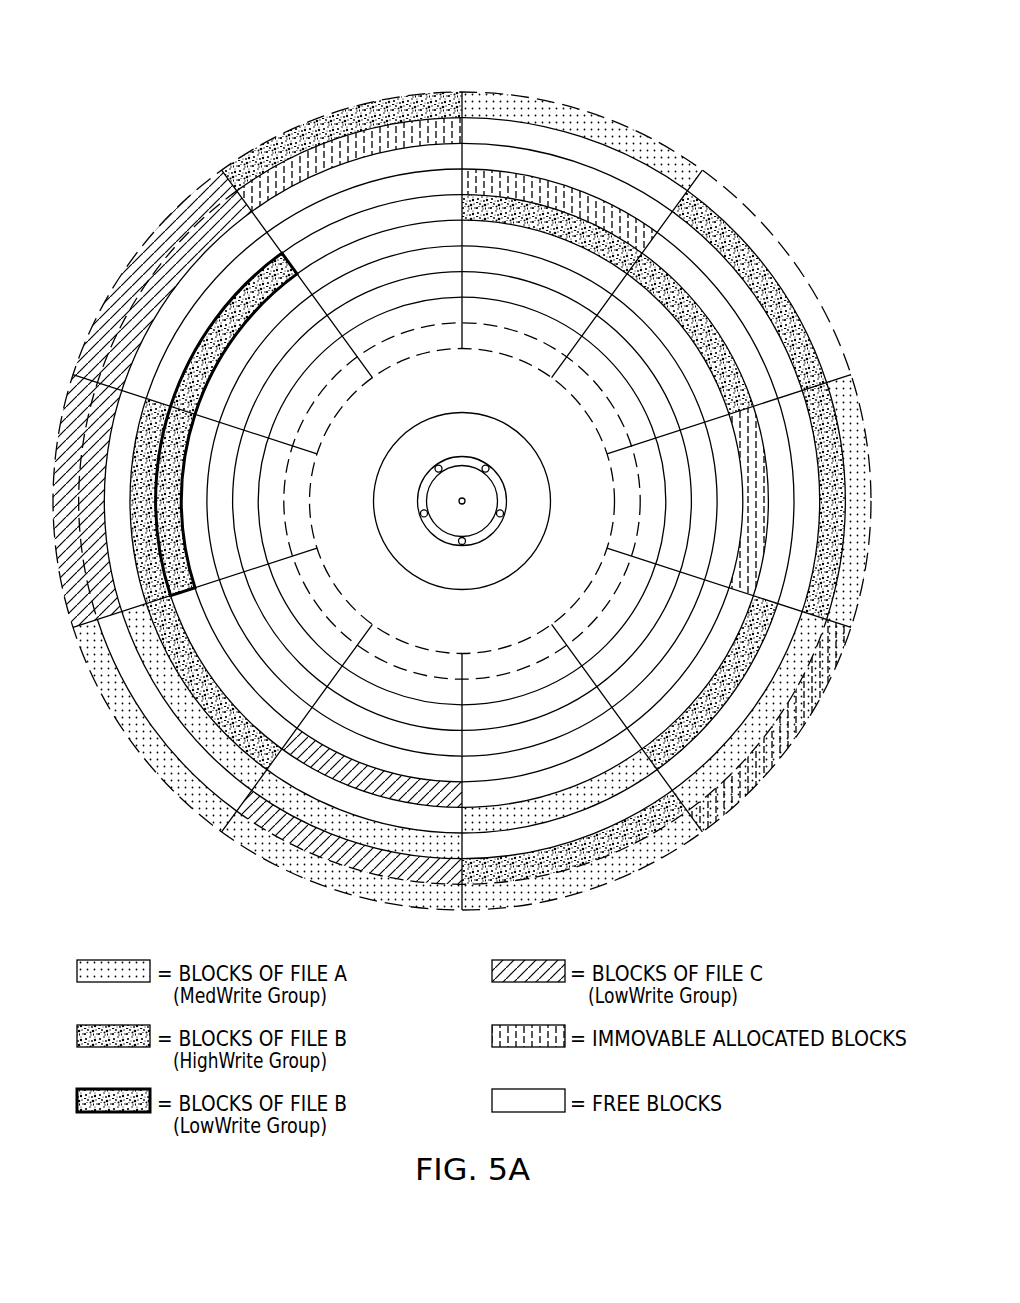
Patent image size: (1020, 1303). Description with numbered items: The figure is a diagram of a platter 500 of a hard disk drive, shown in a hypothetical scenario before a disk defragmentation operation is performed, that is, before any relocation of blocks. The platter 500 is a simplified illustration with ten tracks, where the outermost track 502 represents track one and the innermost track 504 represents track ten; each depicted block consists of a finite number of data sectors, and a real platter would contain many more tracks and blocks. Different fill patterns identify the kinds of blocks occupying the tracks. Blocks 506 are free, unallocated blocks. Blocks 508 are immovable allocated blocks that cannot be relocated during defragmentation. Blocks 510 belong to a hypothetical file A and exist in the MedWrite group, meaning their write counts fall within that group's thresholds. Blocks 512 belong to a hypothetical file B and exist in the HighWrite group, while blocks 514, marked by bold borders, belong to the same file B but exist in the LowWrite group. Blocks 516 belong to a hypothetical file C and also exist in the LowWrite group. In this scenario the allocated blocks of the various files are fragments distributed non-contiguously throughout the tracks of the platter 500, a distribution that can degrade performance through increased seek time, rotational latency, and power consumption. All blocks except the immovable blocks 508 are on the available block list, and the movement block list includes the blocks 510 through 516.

The platter 500 is at (452, 460).
The track 502 is at (160, 757).
The track 504 is at (352, 388).
The free blocks 506 is at (787, 266).
The immovable allocated blocks 508 is at (396, 126).
The blocks of file A 510 is at (556, 110).
The blocks of file B 512 is at (310, 131).
The blocks of file B 514 is at (238, 288).
The blocks of file C 516 is at (128, 283).